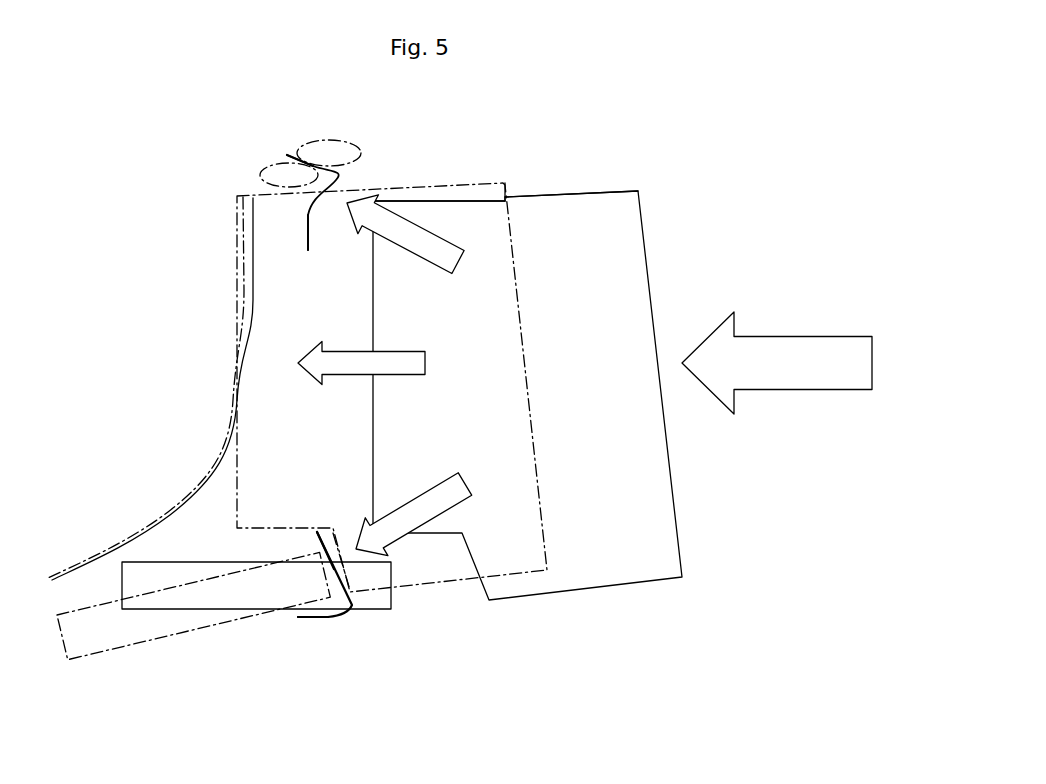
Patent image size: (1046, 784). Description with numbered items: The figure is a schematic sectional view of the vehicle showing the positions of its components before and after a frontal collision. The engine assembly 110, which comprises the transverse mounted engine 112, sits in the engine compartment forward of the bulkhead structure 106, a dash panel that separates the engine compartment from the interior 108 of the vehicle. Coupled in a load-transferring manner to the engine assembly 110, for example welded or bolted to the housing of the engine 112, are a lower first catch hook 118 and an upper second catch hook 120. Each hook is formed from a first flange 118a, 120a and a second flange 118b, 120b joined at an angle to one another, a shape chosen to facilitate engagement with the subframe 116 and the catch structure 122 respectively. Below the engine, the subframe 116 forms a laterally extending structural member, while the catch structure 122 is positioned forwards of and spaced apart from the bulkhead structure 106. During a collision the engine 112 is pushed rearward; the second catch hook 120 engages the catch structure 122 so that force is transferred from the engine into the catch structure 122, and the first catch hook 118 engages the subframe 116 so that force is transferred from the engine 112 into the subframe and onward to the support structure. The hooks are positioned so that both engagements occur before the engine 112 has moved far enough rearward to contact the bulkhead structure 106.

The bulkhead structure 106 is at (233, 266).
The interior 108 is at (138, 354).
The engine assembly 110 is at (605, 158).
The engine 112 is at (505, 183).
The subframe 116 is at (148, 640).
The first catch hook 118 is at (381, 620).
The first flange 118a is at (335, 527).
The second flange 118b is at (313, 620).
The second catch hook 120 is at (362, 178).
The first flange 120a is at (308, 232).
The second flange 120b is at (288, 153).
The catch structure 122 is at (268, 168).